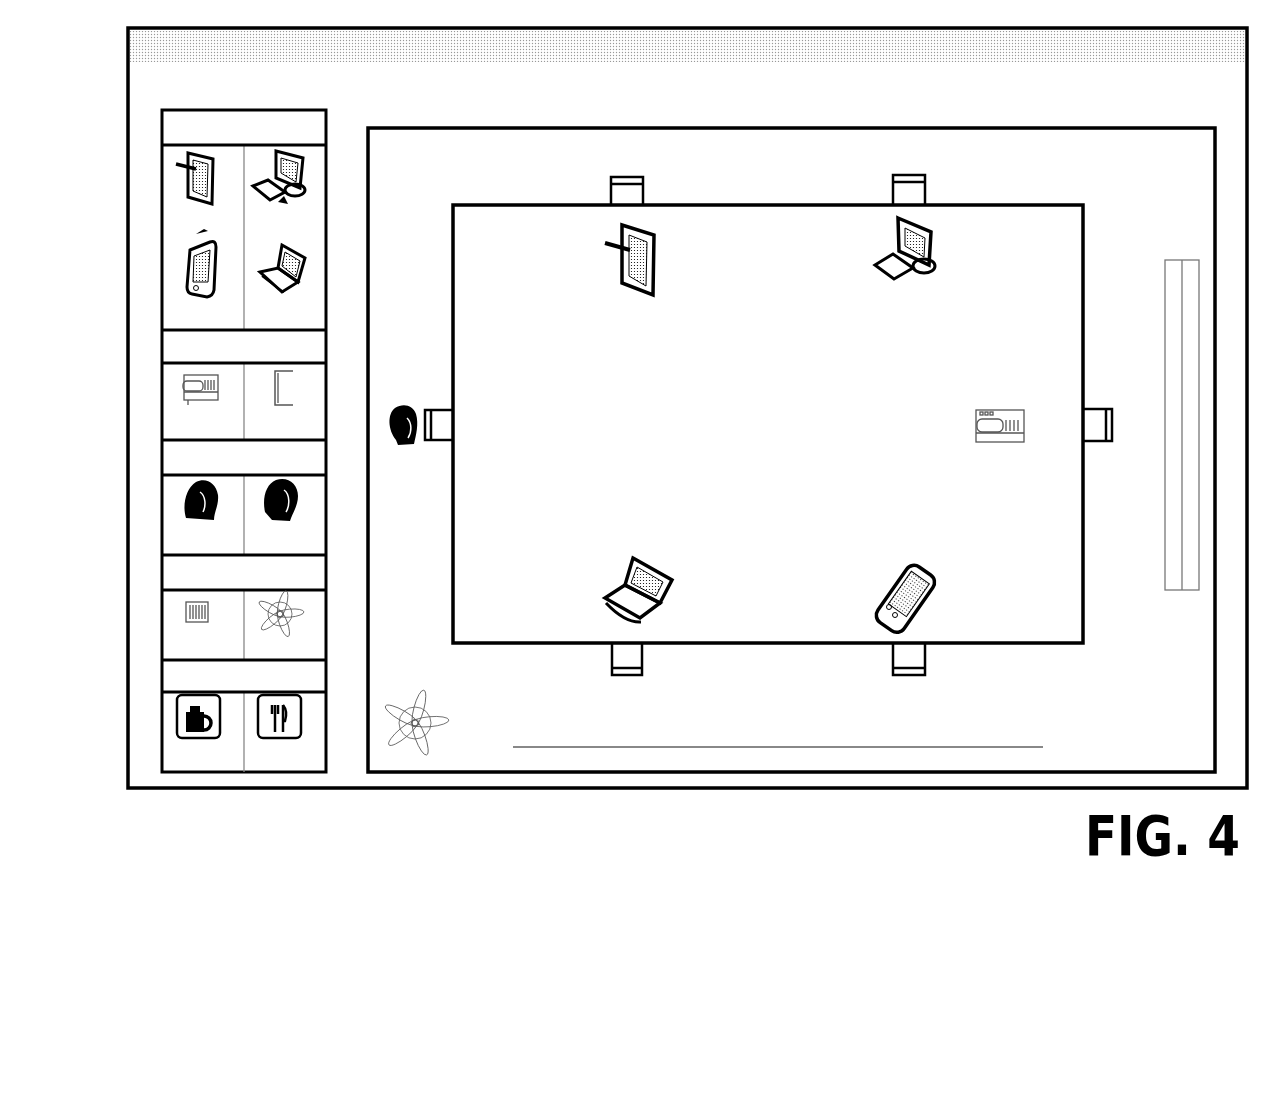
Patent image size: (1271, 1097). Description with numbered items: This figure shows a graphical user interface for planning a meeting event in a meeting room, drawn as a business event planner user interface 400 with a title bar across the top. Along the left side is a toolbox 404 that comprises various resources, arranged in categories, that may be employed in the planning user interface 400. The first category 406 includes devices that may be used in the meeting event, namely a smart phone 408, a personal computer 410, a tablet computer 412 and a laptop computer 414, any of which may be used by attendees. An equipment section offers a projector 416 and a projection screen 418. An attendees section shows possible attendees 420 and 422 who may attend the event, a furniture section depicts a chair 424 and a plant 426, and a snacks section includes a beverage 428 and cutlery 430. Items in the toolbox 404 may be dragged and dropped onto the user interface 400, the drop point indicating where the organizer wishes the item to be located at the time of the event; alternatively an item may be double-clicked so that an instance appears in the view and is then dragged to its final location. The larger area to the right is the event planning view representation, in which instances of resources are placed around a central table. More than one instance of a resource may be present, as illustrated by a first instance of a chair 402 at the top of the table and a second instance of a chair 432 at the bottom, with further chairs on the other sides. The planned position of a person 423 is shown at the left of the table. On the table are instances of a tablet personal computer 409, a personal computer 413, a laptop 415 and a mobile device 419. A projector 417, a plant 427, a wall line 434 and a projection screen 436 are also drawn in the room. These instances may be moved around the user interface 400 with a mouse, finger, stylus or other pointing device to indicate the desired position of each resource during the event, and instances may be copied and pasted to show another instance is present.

The user interface 400 is at (607, 60).
The chair 402 is at (913, 173).
The toolbox 404 is at (245, 110).
The category 406 is at (310, 127).
The smart phone 408 is at (217, 228).
The personal computer 410 is at (297, 228).
The tablet computer 412 is at (217, 320).
The laptop computer 414 is at (297, 320).
The projector 416 is at (215, 427).
The projection screen 418 is at (300, 427).
The attendee 420 is at (215, 550).
The attendee 422 is at (297, 550).
The chair 424 is at (215, 655).
The plant 426 is at (297, 655).
The beverage 428 is at (215, 768).
The cutlery 430 is at (297, 768).
The tablet personal computer 409 is at (660, 266).
The personal computer 413 is at (940, 256).
The laptop 415 is at (673, 602).
The projector 417 is at (997, 400).
The mobile device 419 is at (930, 612).
The person 423 is at (410, 395).
The plant 427 is at (420, 697).
The chair 432 is at (648, 668).
The wall line 434 is at (852, 742).
The projection screen 436 is at (1163, 592).